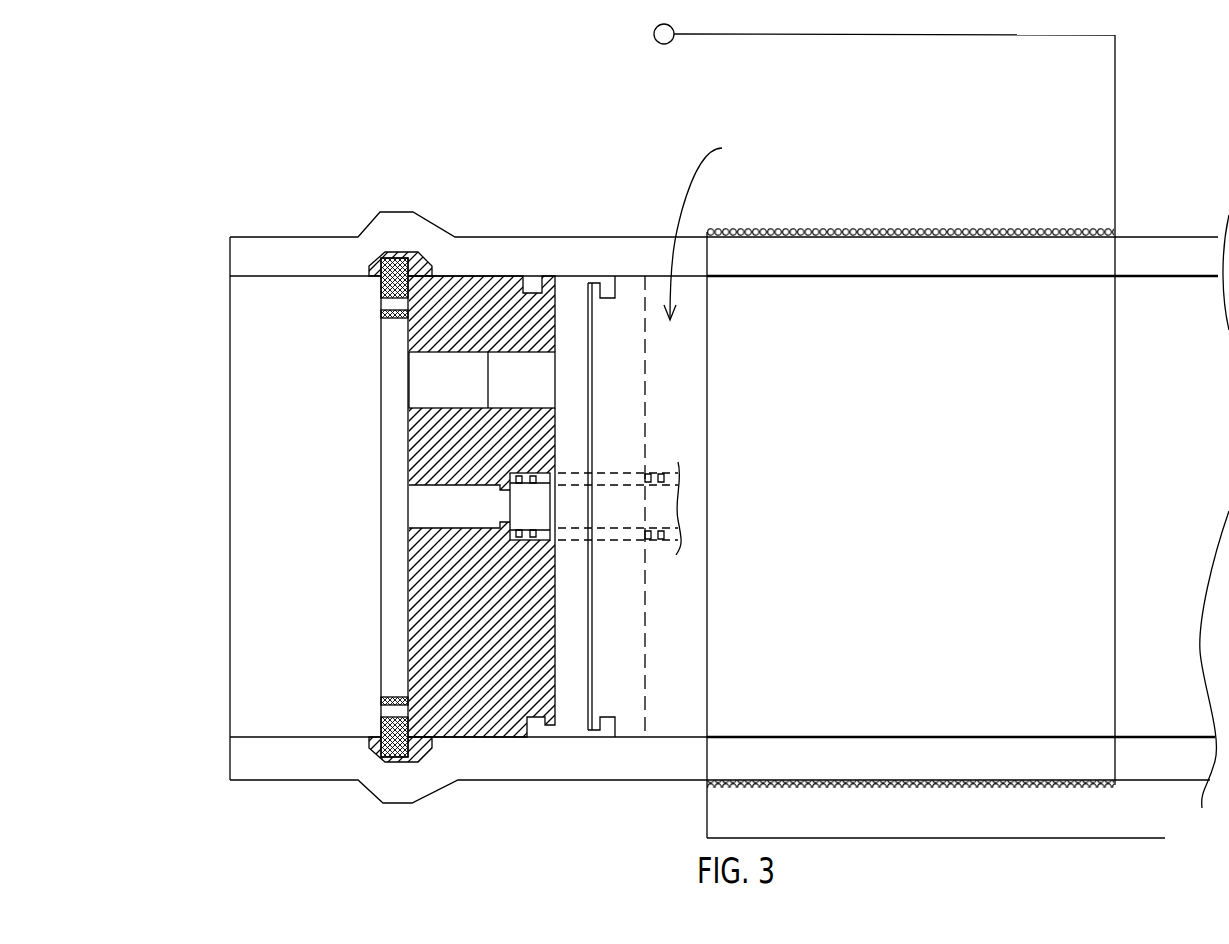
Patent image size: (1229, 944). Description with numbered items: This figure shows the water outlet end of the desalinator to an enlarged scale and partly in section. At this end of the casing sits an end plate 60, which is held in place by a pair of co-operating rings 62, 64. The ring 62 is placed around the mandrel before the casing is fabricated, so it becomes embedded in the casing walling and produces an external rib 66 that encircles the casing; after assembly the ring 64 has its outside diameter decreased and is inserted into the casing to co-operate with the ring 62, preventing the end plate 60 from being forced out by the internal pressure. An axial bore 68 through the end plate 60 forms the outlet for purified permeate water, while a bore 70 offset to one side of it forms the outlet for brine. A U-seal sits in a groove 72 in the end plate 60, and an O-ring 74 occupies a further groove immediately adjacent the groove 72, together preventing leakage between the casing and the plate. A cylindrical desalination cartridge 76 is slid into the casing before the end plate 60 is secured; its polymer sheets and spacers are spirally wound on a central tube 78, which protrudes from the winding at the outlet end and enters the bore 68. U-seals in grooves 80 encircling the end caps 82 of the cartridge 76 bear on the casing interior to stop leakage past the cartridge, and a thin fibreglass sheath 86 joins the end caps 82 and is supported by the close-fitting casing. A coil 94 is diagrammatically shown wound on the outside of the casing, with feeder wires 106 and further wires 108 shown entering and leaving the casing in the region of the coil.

The end plate 60 is at (557, 461).
The ring 62 is at (370, 262).
The ring 64 is at (380, 285).
The external rib 66 is at (405, 212).
The axial bore 68 is at (452, 488).
The bore 70 is at (398, 377).
The groove 72 is at (537, 296).
The O-ring 74 is at (512, 737).
The desalination cartridge 76 is at (712, 224).
The central tube 78 is at (590, 472).
The grooves 80 is at (613, 298).
The end caps 82 is at (588, 402).
The sheath 86 is at (940, 278).
The coil 94 is at (1115, 493).
The feeder wires 106 is at (1115, 83).
The further wires 108 is at (1058, 838).